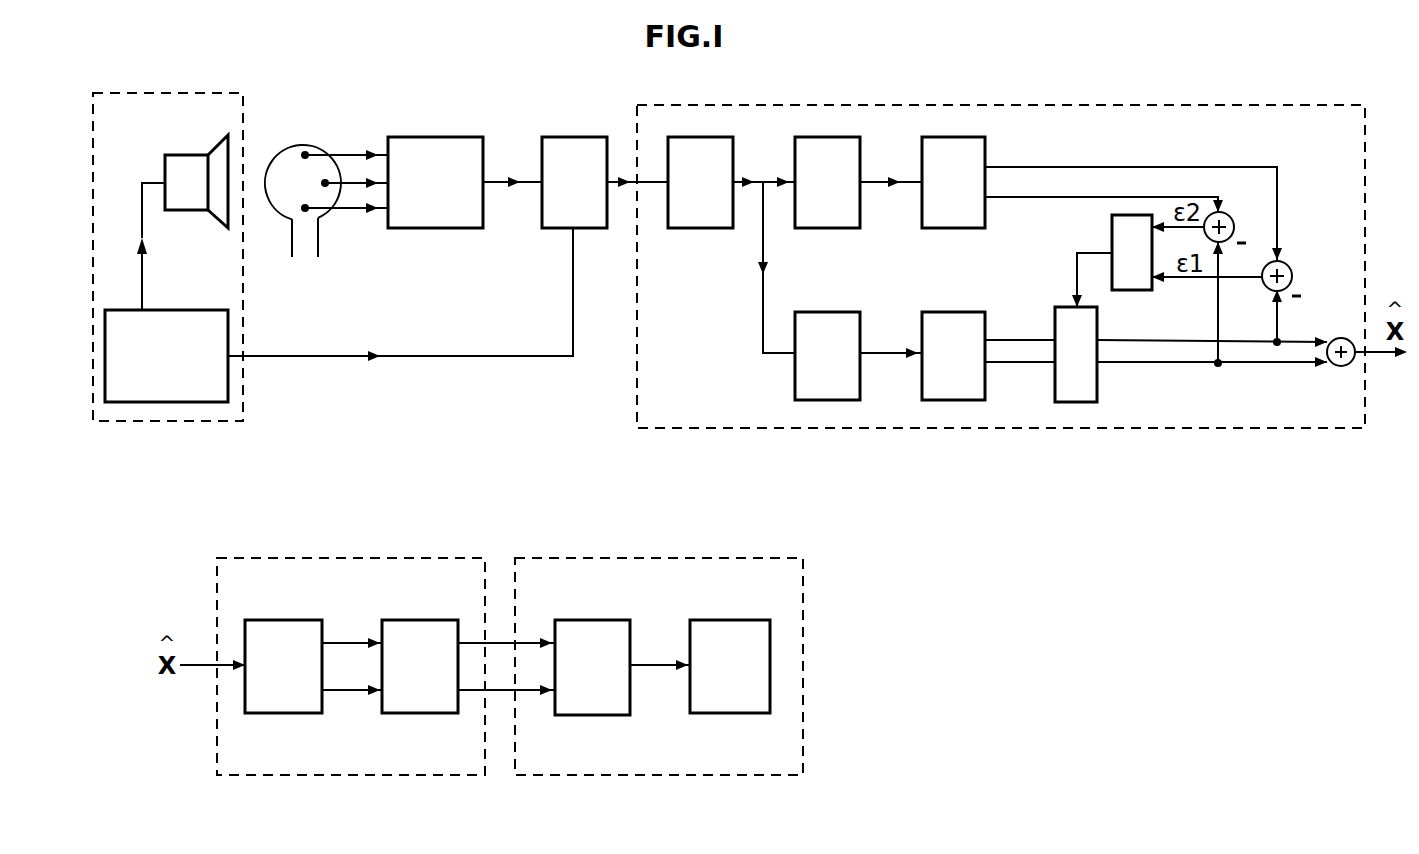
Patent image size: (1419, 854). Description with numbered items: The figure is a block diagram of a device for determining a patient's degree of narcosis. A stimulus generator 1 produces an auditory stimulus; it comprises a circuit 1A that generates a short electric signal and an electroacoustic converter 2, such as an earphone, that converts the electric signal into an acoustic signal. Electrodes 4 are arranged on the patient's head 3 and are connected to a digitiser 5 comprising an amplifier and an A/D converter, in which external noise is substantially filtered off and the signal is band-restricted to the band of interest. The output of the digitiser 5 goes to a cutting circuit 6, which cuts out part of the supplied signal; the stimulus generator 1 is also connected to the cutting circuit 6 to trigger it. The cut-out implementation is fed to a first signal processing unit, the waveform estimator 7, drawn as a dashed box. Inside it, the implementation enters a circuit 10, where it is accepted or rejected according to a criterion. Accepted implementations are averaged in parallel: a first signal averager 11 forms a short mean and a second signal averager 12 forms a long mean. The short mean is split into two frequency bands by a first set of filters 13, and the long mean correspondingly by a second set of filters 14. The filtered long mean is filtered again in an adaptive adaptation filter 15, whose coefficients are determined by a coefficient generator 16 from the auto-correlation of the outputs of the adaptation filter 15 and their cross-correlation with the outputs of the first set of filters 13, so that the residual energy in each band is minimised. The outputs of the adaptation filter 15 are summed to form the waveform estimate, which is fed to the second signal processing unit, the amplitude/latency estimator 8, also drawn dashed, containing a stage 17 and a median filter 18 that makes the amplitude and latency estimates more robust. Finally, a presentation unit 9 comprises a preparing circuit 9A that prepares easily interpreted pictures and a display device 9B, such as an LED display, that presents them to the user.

The stimulus generator 1 is at (160, 92).
The circuit for generating a short electric signal 1A is at (185, 335).
The electroacoustic converter 2 is at (185, 170).
The patient's head 3 is at (280, 170).
The electrodes 4 is at (305, 208).
The digitiser 5 is at (428, 160).
The cutting circuit 6 is at (568, 158).
The waveform estimator 7 is at (770, 428).
The amplitude/latency estimator 8 is at (358, 558).
The presentation unit 9 is at (645, 558).
The preparing circuit 9A is at (588, 637).
The display device 9B is at (732, 637).
The circuit 10 is at (704, 205).
The first signal averager 11 is at (830, 203).
The second signal averager 12 is at (822, 338).
The first set of filters 13 is at (957, 203).
The second set of filters 14 is at (950, 336).
The adaptation filter 15 is at (1070, 330).
The coefficient generator 16 is at (1125, 228).
The first processing stage 17 is at (278, 640).
The median filter 18 is at (414, 642).